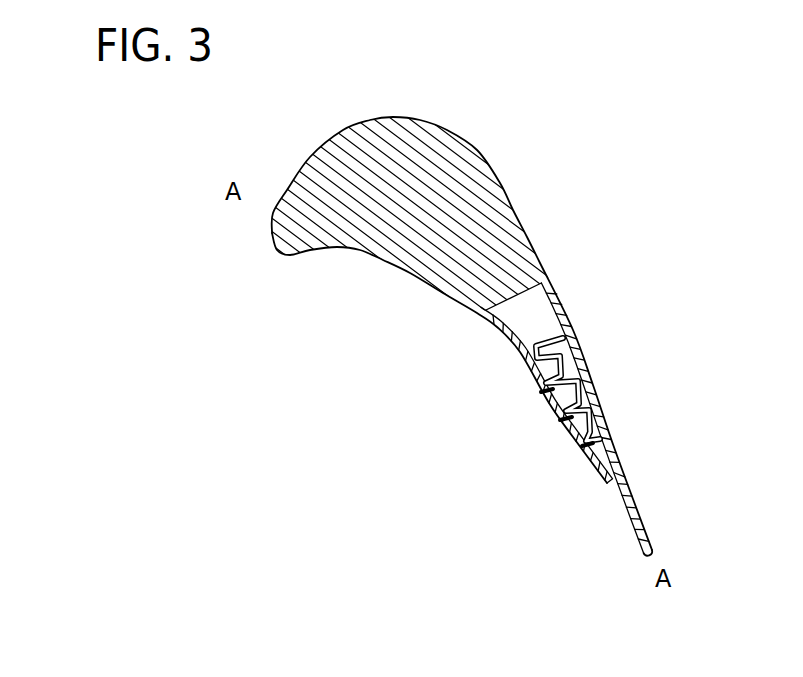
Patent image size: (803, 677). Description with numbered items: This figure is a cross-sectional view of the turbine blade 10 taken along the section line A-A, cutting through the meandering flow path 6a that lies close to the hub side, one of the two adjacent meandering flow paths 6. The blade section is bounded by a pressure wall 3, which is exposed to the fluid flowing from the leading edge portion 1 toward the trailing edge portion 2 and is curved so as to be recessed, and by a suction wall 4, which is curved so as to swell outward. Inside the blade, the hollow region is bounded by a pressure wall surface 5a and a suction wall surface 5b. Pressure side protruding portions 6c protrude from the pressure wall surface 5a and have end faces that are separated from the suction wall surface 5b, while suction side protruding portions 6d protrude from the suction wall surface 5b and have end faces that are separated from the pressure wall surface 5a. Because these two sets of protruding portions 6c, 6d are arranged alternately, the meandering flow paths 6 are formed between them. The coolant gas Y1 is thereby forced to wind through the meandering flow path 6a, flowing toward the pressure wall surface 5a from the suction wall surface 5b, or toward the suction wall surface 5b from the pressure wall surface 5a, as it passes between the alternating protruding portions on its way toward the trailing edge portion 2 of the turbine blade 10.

The leading edge portion 1 is at (401, 330).
The trailing edge portion 2 is at (650, 548).
The pressure wall 3 is at (378, 258).
The suction wall 4 is at (505, 190).
The pressure wall surface 5a is at (508, 328).
The suction wall surface 5b is at (545, 292).
The meandering flow paths 6 is at (567, 348).
The meandering flow path 6a is at (567, 348).
The pressure side protruding portions 6c is at (550, 389).
The suction side protruding portions 6d is at (555, 344).
The turbine blade 10 is at (401, 321).
The coolant gas Y1 is at (616, 503).